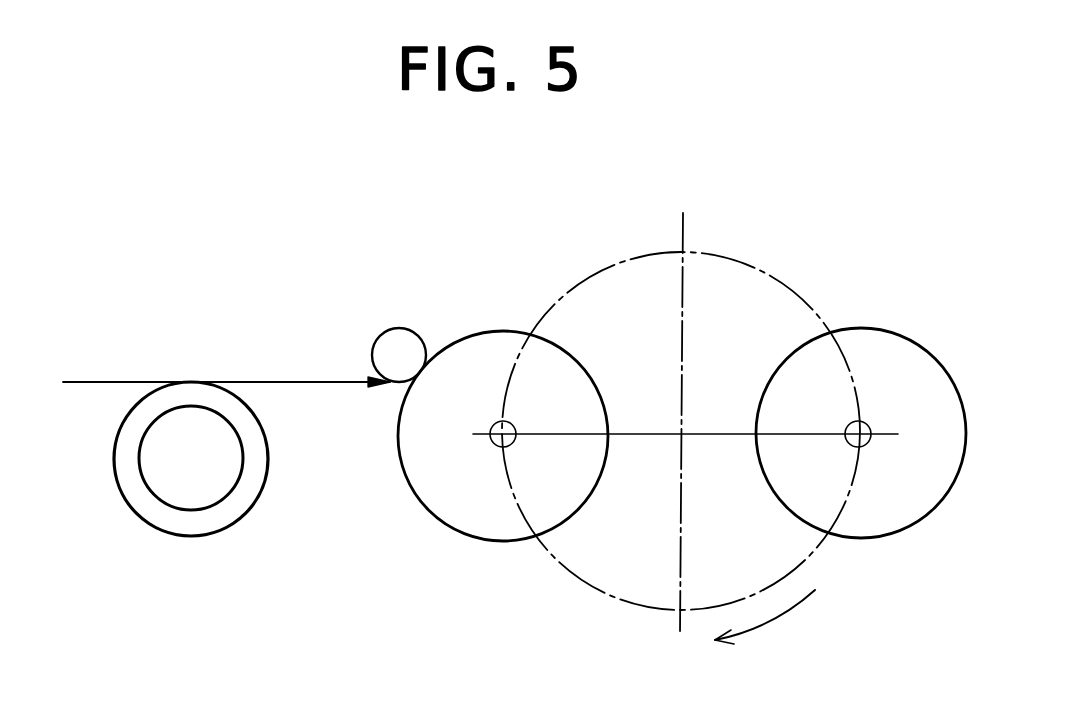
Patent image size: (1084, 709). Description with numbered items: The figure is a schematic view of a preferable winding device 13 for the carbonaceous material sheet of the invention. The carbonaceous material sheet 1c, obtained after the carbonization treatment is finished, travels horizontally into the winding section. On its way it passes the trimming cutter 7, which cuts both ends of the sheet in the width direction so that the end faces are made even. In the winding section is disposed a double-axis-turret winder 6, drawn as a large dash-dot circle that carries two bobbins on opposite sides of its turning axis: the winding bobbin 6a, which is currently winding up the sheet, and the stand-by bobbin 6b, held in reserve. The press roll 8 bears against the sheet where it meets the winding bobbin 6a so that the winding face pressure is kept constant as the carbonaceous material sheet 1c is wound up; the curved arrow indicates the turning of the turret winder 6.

The carbonaceous material sheet 1c is at (123, 380).
The trimming cutter 7 is at (203, 490).
The press roll 8 is at (387, 330).
The winding device 13 is at (437, 302).
The double-axis-turret winder 6 is at (787, 280).
The winding bobbin 6a is at (480, 515).
The stand-by bobbin 6b is at (875, 512).